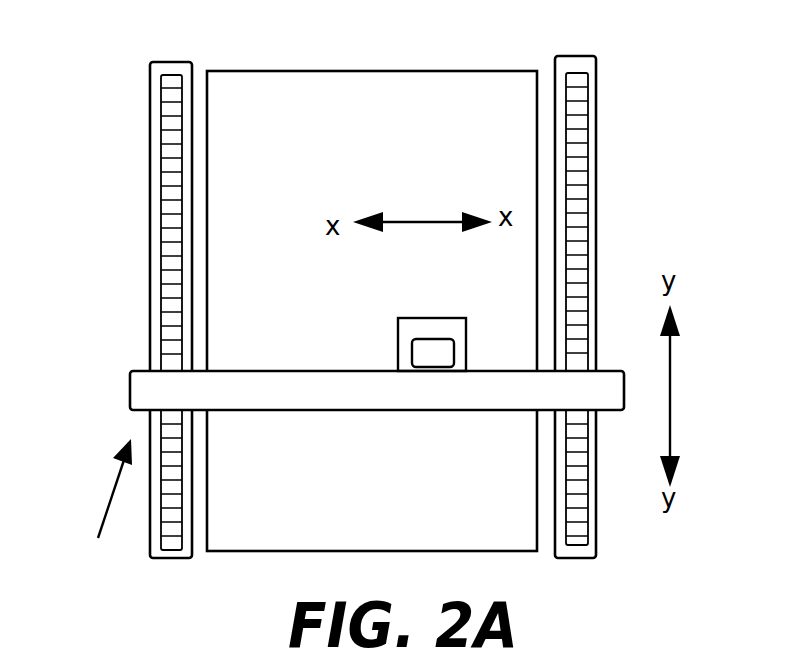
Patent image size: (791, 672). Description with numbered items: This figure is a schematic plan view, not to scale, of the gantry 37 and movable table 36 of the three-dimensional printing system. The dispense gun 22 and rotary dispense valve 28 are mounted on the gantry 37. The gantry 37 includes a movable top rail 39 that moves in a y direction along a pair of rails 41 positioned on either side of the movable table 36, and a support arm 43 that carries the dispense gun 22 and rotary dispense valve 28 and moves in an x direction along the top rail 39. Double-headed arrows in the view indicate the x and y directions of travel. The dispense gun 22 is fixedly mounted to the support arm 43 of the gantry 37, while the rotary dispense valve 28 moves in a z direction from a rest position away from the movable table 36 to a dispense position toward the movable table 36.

The movable table 36 is at (378, 103).
The gantry 37 is at (102, 510).
The movable top rail 39 is at (443, 410).
The rails 41 is at (160, 238).
The support arm 43 is at (440, 328).
The dispense gun 22 is at (433, 353).
The rotary dispense valve 28 is at (397, 345).